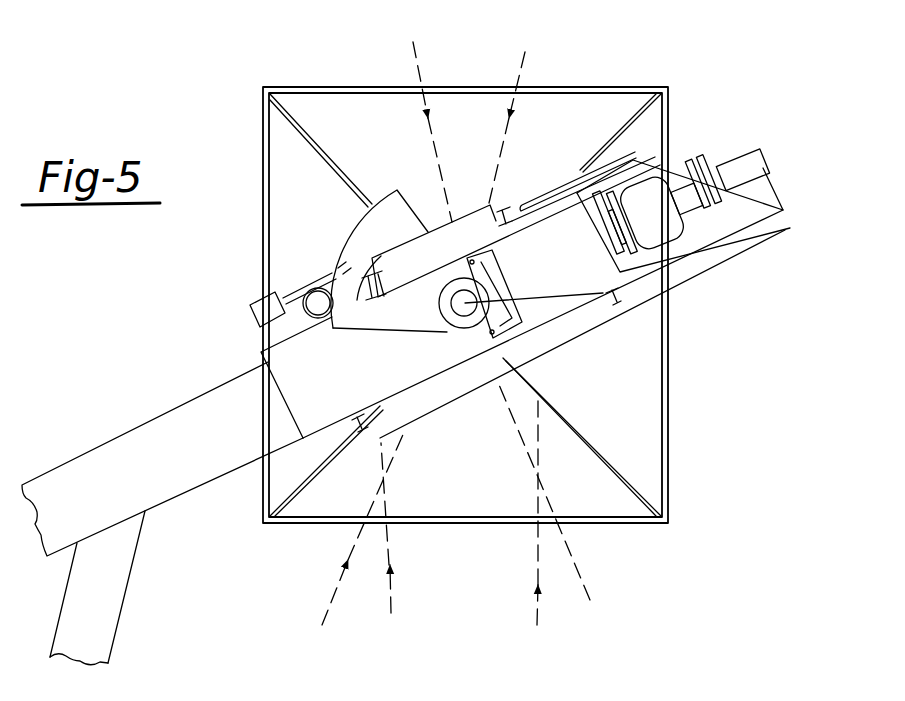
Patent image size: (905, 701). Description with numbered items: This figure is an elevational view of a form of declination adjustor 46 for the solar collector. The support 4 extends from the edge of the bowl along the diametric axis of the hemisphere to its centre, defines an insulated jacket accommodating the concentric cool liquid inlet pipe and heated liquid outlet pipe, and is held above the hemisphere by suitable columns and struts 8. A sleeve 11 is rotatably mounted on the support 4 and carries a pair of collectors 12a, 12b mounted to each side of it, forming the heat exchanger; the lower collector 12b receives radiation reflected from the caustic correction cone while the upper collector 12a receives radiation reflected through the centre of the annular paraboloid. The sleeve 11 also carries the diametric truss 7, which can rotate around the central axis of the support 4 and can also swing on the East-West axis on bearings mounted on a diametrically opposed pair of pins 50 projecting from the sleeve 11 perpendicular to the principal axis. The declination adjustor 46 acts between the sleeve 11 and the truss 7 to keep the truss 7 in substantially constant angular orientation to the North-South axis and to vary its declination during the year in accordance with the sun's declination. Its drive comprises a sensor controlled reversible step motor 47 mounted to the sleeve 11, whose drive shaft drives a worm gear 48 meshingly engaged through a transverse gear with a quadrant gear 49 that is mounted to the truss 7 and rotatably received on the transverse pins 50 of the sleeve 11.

The support 4 is at (187, 468).
The diametric truss 7 is at (263, 143).
The columns and struts 8 is at (98, 617).
The sleeve 11 is at (278, 360).
The upper collector 12a is at (458, 237).
The lower collector 12b is at (557, 338).
The declination adjustor 46 is at (290, 264).
The sensor controlled reversible step motor 47 is at (250, 315).
The worm gear 48 is at (300, 283).
The quadrant gear 49 is at (357, 247).
The pins 50 is at (612, 303).